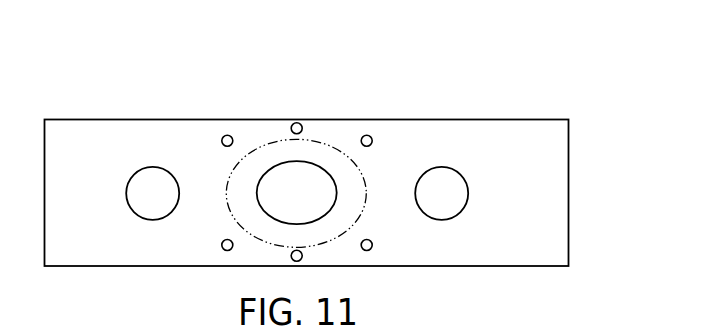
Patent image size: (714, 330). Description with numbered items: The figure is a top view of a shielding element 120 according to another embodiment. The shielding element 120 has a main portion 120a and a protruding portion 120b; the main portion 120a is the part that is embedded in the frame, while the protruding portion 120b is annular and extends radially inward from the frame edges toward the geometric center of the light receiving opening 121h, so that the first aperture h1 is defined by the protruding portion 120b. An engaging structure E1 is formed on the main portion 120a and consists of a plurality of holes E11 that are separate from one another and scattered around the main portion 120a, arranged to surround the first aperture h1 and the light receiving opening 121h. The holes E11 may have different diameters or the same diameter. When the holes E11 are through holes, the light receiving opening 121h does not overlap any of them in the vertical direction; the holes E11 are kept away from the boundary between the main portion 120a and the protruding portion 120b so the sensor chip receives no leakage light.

The shielding element 120 is at (612, 86).
The main portion 120a is at (92, 153).
The protruding portion 120b is at (243, 183).
The first aperture h1 is at (292, 176).
The light receiving opening 121h is at (340, 148).
The engaging structure E1 is at (495, 60).
The holes E11 is at (367, 137).